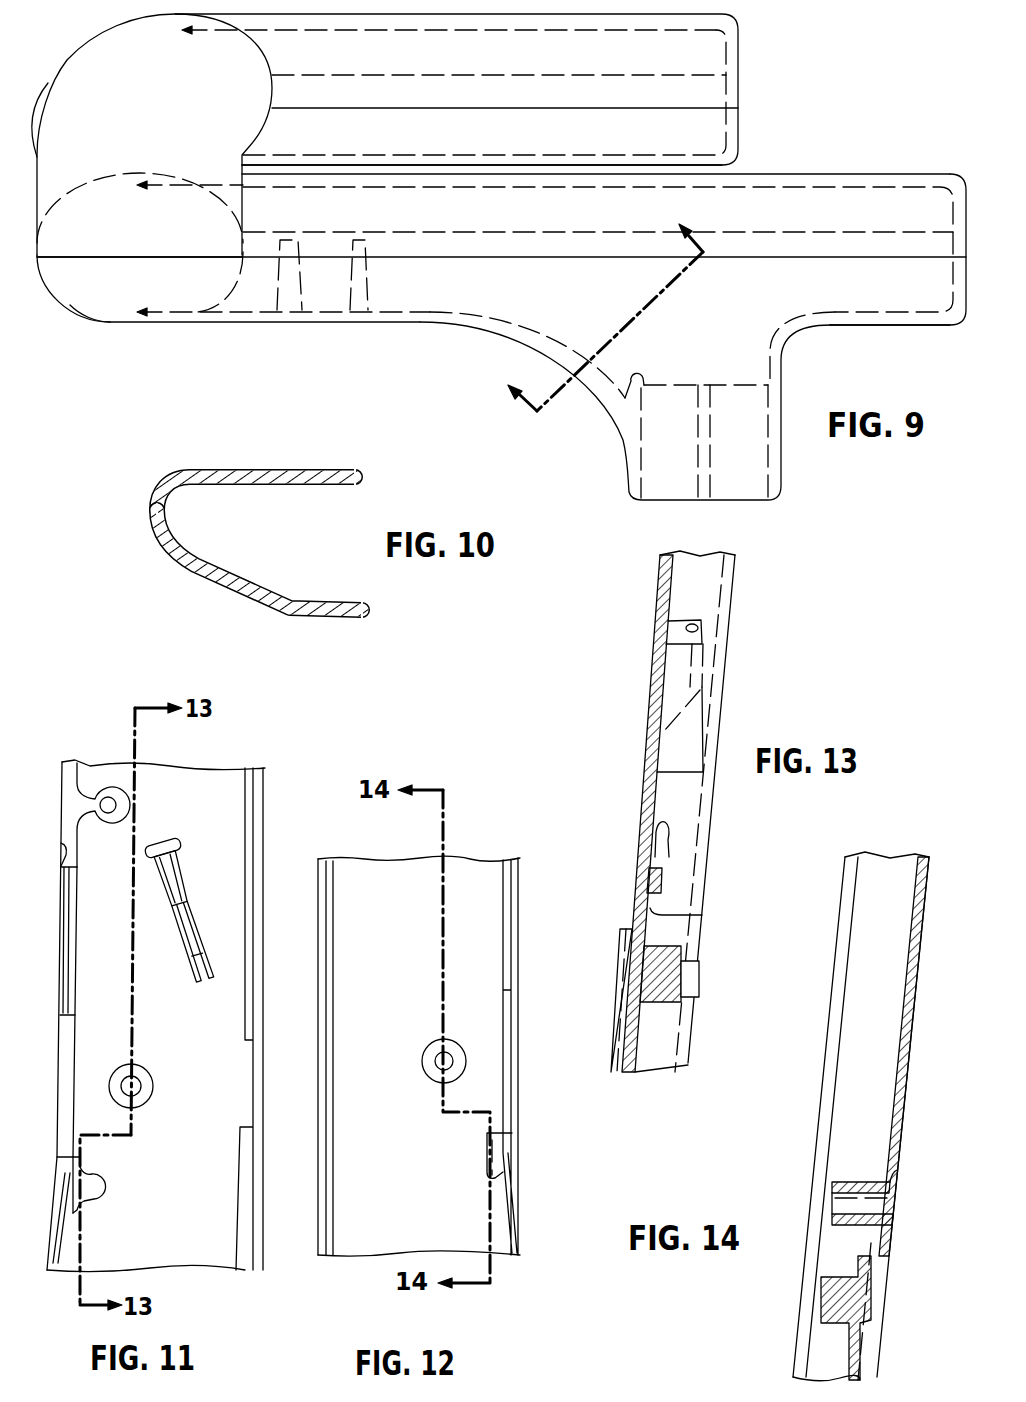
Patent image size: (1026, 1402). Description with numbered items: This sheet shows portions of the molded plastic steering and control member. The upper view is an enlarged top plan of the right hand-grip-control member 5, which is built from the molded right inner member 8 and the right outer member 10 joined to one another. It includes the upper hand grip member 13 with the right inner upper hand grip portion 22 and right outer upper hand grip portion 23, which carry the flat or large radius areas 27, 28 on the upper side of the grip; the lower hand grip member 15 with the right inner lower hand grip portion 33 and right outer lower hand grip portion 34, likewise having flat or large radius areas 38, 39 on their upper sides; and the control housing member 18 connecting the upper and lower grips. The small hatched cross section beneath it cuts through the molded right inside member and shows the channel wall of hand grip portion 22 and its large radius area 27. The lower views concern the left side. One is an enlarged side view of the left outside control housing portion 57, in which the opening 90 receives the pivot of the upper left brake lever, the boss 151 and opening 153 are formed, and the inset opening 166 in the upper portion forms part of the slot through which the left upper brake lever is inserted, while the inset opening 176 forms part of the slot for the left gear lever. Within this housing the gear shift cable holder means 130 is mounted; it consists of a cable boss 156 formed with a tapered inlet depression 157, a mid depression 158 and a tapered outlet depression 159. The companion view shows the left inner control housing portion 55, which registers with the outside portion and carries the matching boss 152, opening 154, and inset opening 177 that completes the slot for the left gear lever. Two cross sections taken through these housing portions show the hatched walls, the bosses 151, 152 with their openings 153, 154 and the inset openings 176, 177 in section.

In FIG. 9, the hand-grip-control member 5 is at (97, 340).
In FIG. 9, the right inner member 8 is at (850, 326).
In FIG. 9, the right outer member 10 is at (374, 228).
In FIG. 9, the upper hand grip member 13 is at (942, 168).
In FIG. 9, the lower hand grip member 15 is at (752, 65).
In FIG. 9, the control housing member 18 is at (66, 58).
In FIG. 9, the right inner upper hand grip portion 22 is at (410, 325).
In FIG. 10, the right inner upper hand grip portion 22 is at (185, 565).
In FIG. 9, the right outer upper hand grip portion 23 is at (840, 175).
In FIG. 9, the flat or large radius area 27 is at (481, 293).
In FIG. 10, the flat or large radius area 27 is at (278, 470).
In FIG. 9, the flat or large radius area 28 is at (481, 217).
In FIG. 9, the right inner lower hand grip portion 33 is at (740, 135).
In FIG. 9, the right outer lower hand grip portion 34 is at (700, 16).
In FIG. 9, the flat or large radius area 38 is at (626, 149).
In FIG. 9, the flat or large radius area 39 is at (626, 71).
In FIG. 12, the left inner control housing portion 55 is at (472, 872).
In FIG. 14, the left inner control housing portion 55 is at (890, 872).
In FIG. 11, the left outside control housing portion 57 is at (103, 762).
In FIG. 13, the left outside control housing portion 57 is at (698, 585).
In FIG. 11, the opening 90 is at (112, 805).
In FIG. 11, the gear shift cable holder means 130 is at (155, 923).
In FIG. 11, the boss 151 is at (152, 1080).
In FIG. 13, the boss 151 is at (664, 828).
In FIG. 12, the boss 152 is at (425, 1057).
In FIG. 14, the boss 152 is at (861, 1181).
In FIG. 11, the opening 153 is at (137, 1078).
In FIG. 13, the opening 153 is at (640, 870).
In FIG. 12, the opening 154 is at (444, 1056).
In FIG. 14, the opening 154 is at (849, 1212).
In FIG. 11, the cable boss 156 is at (183, 907).
In FIG. 11, the tapered inlet depression 157 is at (208, 958).
In FIG. 11, the mid depression 158 is at (190, 940).
In FIG. 11, the tapered outlet depression 159 is at (172, 843).
In FIG. 11, the inset opening 166 is at (64, 850).
In FIG. 11, the inset opening 176 is at (75, 1056).
In FIG. 13, the inset opening 176 is at (632, 936).
In FIG. 12, the inset opening 177 is at (514, 1032).
In FIG. 14, the inset opening 177 is at (880, 1273).